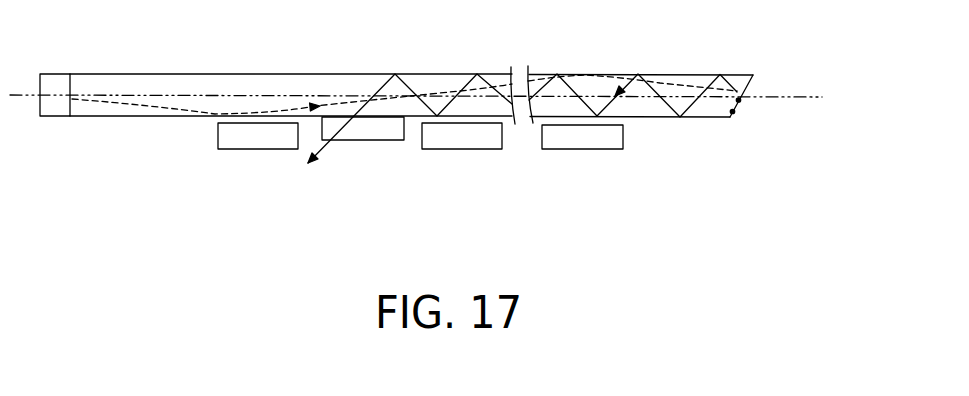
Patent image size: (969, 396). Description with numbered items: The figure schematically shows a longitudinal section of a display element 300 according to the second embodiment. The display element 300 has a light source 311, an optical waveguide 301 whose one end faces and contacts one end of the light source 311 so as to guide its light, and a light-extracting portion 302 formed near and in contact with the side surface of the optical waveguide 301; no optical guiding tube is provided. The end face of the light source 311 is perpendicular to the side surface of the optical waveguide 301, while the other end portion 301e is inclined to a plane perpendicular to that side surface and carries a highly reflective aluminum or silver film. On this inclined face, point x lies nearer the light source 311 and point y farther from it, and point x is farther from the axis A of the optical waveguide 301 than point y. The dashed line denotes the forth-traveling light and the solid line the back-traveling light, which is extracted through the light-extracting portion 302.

The display element 300 is at (428, 139).
The optical waveguide 301 is at (458, 82).
The other end portion 301e is at (752, 84).
The light-extracting portion 302 is at (610, 140).
The light source 311 is at (53, 102).
The axis A is at (427, 90).
The point x is at (732, 114).
The point y is at (739, 102).